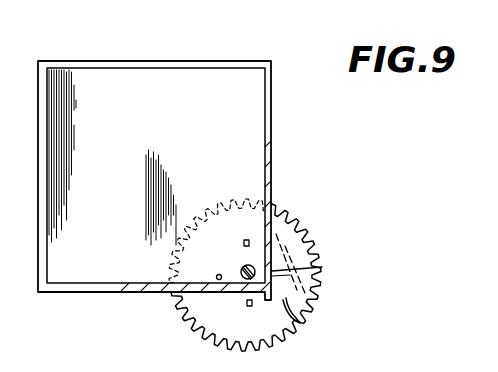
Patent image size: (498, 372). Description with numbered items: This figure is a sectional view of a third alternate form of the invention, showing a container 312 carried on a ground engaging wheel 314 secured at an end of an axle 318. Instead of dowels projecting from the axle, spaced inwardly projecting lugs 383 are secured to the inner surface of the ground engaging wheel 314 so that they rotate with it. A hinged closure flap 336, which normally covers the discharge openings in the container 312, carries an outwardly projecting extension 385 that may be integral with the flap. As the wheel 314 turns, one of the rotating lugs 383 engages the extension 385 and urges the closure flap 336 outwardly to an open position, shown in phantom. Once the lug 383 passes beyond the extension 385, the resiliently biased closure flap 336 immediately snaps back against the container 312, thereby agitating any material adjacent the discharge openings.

The container 312 is at (97, 71).
The ground engaging wheel 314 is at (322, 246).
The axle 318 is at (246, 266).
The lug 383 is at (246, 239).
The extension 385 is at (311, 223).
The closure flap 336 is at (298, 320).